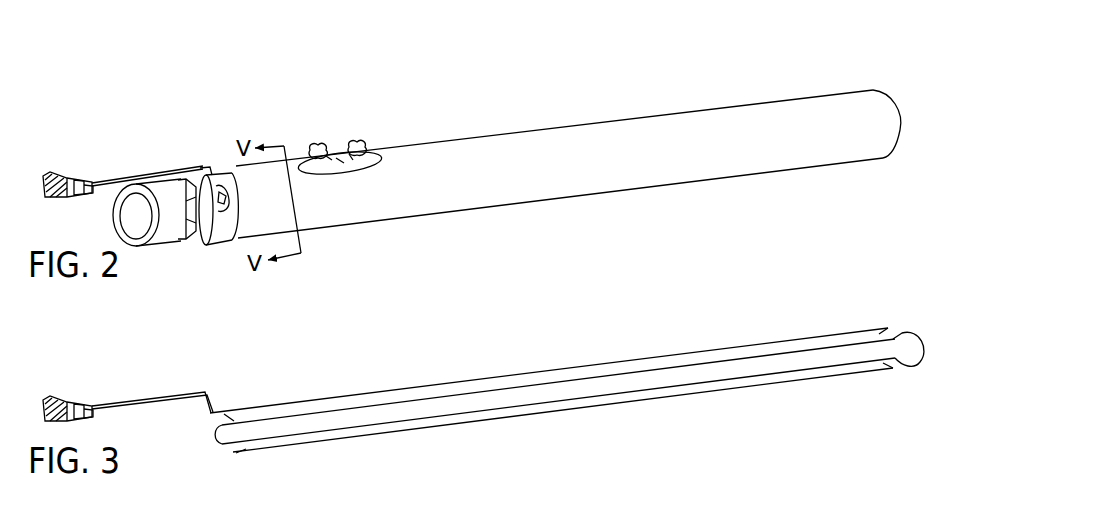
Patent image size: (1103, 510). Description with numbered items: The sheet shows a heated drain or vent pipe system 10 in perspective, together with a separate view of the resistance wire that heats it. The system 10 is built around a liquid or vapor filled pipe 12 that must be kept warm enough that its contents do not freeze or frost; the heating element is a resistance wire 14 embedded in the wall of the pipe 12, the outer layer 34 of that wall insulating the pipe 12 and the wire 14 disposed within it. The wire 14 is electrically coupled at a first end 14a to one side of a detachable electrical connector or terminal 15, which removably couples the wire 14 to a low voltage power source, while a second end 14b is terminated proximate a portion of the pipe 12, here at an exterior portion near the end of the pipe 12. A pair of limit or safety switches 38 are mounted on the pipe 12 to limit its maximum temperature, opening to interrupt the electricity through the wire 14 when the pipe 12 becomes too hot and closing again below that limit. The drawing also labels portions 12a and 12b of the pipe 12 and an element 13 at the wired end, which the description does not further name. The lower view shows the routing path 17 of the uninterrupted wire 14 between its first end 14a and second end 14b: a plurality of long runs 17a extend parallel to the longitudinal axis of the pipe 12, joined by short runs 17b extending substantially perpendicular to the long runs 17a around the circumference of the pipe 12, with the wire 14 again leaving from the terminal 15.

In FIG. 2, the heated drain or vent pipe system 10 is at (680, 82).
In FIG. 2, the pipe 12 is at (575, 138).
In FIG. 2, the first end of housing 12a is at (207, 283).
In FIG. 2, the second end of housing 12b is at (872, 182).
In FIG. 2, the connector nut 13 is at (162, 236).
In FIG. 2, the resistance wire 14 is at (165, 170).
In FIG. 3, the resistance wire 14 is at (143, 398).
In FIG. 2, the first end 14a is at (103, 167).
In FIG. 2, the second end 14b is at (236, 211).
In FIG. 2, the electrical connector or terminal 15 is at (62, 173).
In FIG. 3, the electrical connector or terminal 15 is at (68, 406).
In FIG. 2, the outer layer 34 is at (213, 172).
In FIG. 2, the limit or safety switches 38 is at (315, 150).
In FIG. 3, the routing path 17 is at (822, 407).
In FIG. 3, the long runs 17a is at (497, 378).
In FIG. 3, the short runs 17b is at (216, 440).